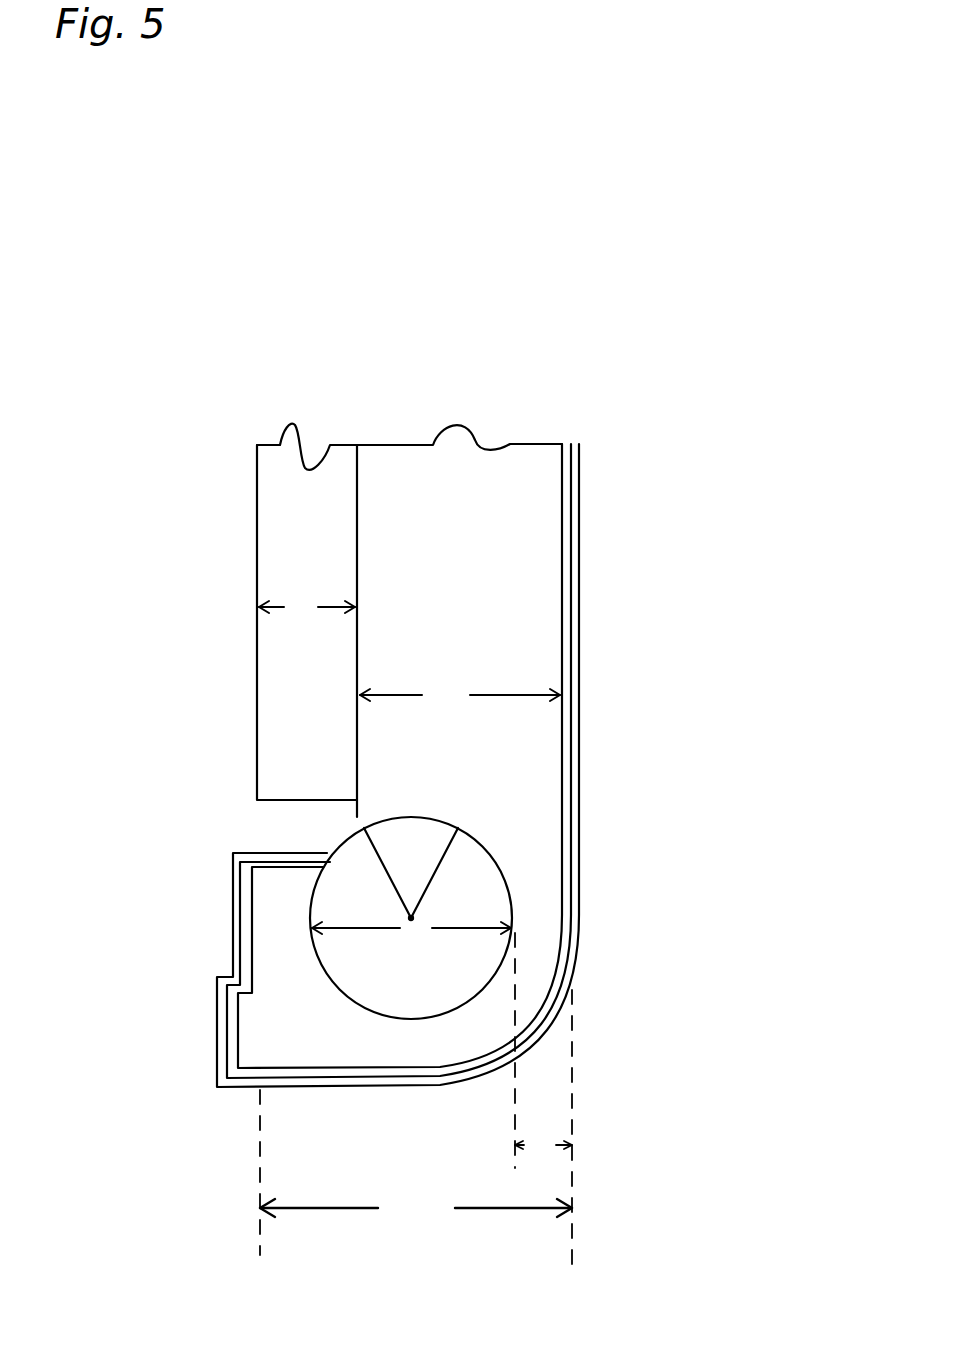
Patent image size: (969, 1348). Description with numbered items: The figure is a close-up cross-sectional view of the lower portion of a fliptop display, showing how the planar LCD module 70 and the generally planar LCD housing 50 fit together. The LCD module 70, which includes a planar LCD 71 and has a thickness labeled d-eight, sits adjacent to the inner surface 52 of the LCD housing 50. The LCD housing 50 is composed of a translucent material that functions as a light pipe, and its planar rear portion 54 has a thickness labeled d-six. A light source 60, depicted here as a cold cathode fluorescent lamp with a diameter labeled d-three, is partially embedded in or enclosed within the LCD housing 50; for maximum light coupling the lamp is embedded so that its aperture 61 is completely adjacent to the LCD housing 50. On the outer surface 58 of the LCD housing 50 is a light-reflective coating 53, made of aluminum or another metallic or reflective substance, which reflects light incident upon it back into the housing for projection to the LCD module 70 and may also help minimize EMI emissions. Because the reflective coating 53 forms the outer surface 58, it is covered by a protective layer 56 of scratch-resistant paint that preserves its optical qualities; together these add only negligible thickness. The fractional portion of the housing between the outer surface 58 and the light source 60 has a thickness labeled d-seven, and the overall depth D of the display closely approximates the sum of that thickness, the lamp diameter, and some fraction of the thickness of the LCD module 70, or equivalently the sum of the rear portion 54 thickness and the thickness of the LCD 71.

The LCD housing 50 is at (680, 425).
The inner surface 52 is at (358, 497).
The light-reflective coating 53 is at (573, 631).
The rear portion 54 is at (600, 500).
The protective layer 56 is at (581, 668).
The outer surface 58 is at (562, 505).
The light source 60 is at (508, 868).
The aperture 61 is at (448, 803).
The LCD module 70 is at (165, 480).
The LCD 71 is at (248, 580).